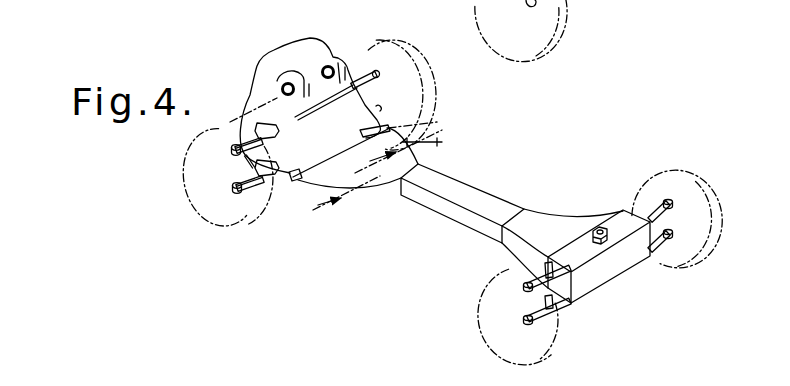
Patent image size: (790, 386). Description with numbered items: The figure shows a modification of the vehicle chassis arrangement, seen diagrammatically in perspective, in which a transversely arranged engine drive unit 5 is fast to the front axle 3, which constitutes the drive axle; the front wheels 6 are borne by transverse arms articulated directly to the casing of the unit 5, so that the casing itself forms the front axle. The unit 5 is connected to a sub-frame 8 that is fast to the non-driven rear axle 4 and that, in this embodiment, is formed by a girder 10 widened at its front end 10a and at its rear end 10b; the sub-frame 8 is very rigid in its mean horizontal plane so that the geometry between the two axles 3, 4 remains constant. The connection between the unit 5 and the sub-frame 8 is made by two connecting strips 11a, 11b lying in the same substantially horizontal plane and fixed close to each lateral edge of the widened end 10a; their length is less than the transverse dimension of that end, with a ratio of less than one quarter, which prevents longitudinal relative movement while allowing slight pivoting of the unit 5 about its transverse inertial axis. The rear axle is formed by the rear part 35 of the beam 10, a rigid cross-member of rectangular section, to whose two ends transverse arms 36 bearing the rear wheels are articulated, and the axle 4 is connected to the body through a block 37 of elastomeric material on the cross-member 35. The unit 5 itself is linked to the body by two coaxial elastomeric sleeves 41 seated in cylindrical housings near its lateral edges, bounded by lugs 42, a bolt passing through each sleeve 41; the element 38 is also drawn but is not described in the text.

The front axle 3 is at (242, 231).
The rear axle 4 is at (627, 196).
The engine drive unit 5 is at (285, 58).
The front wheels 6 is at (202, 208).
The sub-frame 8 is at (451, 195).
The girder 10 is at (452, 213).
The front end 10a is at (395, 173).
The rear end 10b is at (571, 227).
The connecting strip 11a is at (297, 182).
The connecting strip 11b is at (413, 125).
The rear part 35 is at (603, 273).
The transverse arms 36 is at (543, 272).
The block 37 is at (610, 238).
The pivot 38 is at (569, 7).
The sleeves of elastomeric material 41 is at (323, 64).
The lugs 42 is at (286, 78).